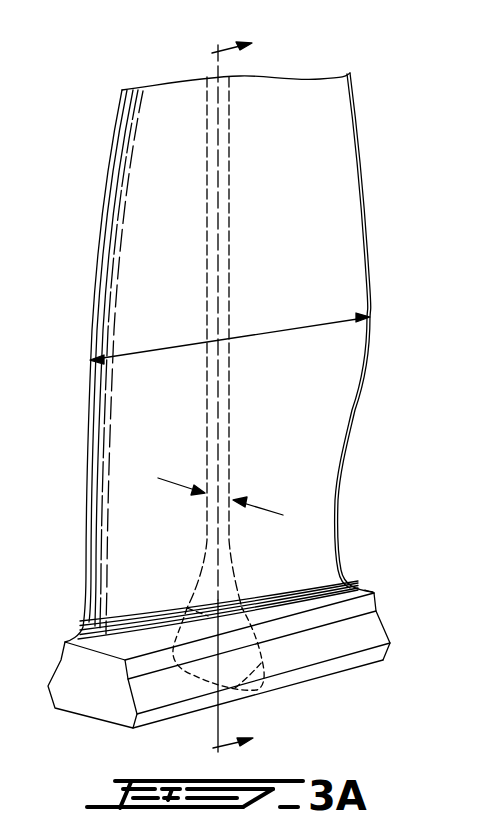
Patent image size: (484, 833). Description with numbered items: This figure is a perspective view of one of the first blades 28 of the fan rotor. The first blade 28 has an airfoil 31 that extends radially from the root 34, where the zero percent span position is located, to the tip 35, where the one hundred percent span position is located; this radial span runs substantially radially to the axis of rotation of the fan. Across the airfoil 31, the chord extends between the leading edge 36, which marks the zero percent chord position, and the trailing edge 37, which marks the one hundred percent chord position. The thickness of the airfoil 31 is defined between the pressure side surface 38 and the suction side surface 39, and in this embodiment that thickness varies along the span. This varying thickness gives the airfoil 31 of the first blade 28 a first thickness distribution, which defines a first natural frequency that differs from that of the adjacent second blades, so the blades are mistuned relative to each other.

The first blade 28 is at (102, 85).
The airfoil 31 is at (335, 160).
The root 34 is at (348, 577).
The tip 35 is at (325, 78).
The leading edge 36 is at (94, 258).
The trailing edge 37 is at (373, 247).
The pressure side surface 38 is at (296, 411).
The suction side surface 39 is at (92, 425).